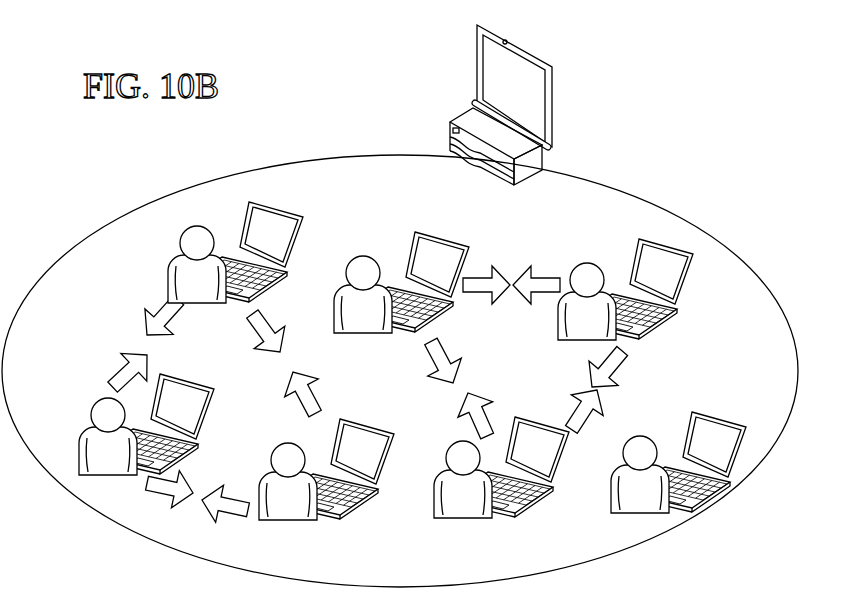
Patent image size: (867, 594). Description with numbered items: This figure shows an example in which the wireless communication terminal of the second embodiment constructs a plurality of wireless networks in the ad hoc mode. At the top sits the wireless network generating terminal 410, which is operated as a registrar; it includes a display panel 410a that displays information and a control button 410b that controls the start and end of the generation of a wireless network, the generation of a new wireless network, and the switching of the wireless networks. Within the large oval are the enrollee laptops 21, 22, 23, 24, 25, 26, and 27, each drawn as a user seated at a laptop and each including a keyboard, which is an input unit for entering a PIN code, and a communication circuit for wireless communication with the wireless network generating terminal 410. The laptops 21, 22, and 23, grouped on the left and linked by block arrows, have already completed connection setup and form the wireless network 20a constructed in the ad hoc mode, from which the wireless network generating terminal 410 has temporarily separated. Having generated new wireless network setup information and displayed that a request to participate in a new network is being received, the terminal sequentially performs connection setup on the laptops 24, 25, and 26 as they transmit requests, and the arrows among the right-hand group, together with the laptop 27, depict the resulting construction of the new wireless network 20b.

The wireless network 20a is at (185, 358).
The new wireless network 20b is at (499, 368).
The laptop 21 is at (210, 410).
The laptop 22 is at (276, 210).
The laptop 23 is at (367, 498).
The laptop 24 is at (453, 240).
The laptop 25 is at (540, 500).
The laptop 26 is at (685, 287).
The laptop 27 is at (720, 413).
The wireless network generating terminal 410 is at (499, 105).
The display panel 410a is at (492, 70).
The control button 410b is at (451, 128).